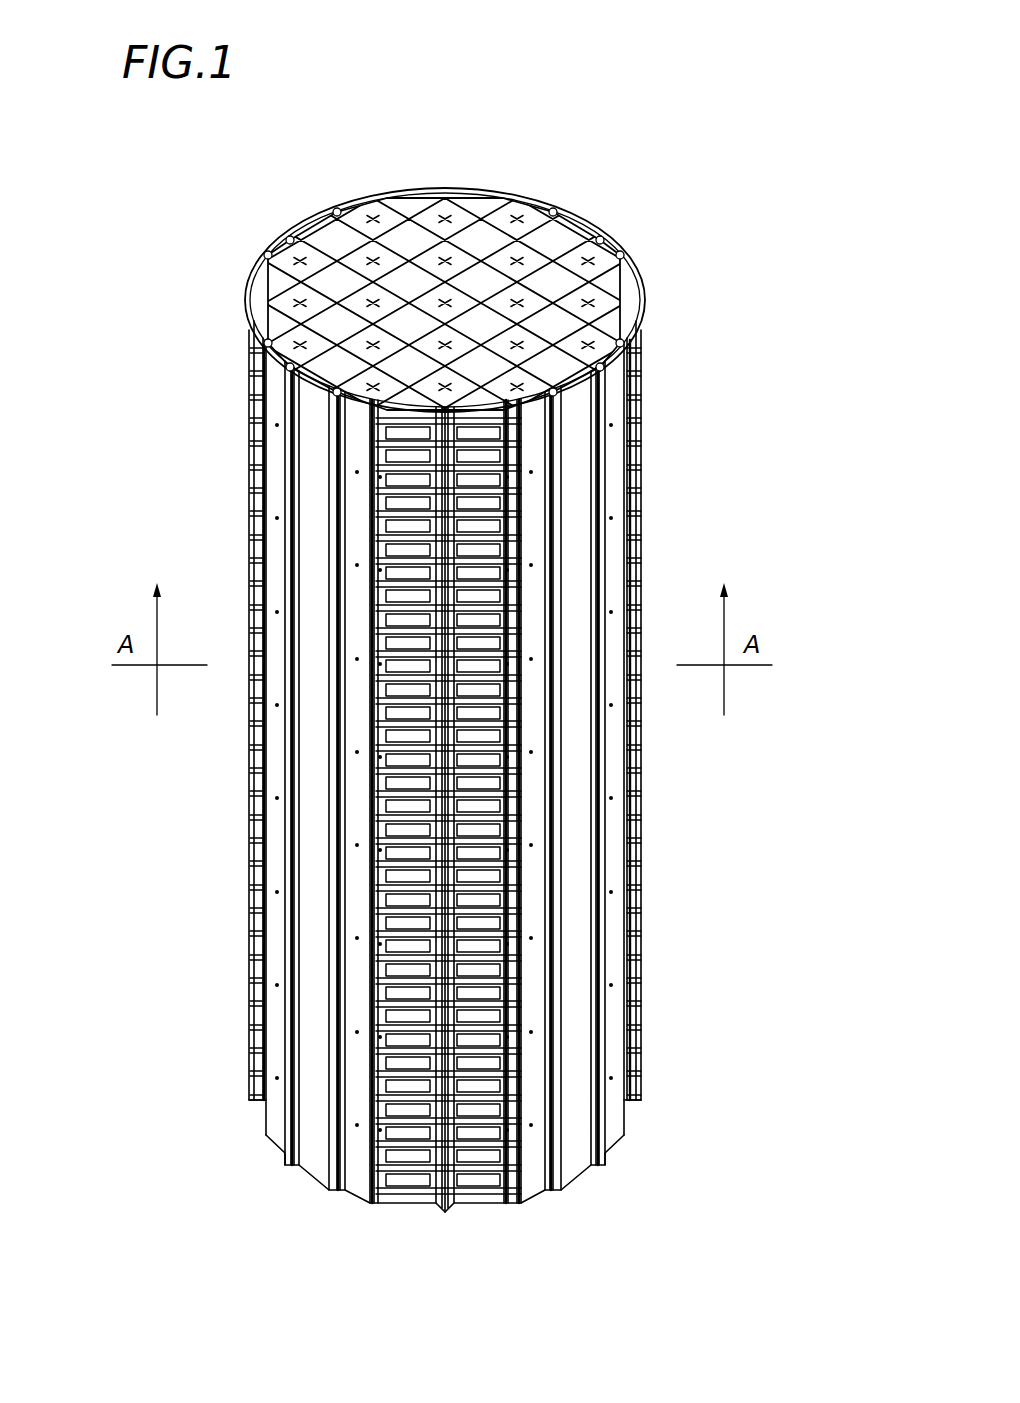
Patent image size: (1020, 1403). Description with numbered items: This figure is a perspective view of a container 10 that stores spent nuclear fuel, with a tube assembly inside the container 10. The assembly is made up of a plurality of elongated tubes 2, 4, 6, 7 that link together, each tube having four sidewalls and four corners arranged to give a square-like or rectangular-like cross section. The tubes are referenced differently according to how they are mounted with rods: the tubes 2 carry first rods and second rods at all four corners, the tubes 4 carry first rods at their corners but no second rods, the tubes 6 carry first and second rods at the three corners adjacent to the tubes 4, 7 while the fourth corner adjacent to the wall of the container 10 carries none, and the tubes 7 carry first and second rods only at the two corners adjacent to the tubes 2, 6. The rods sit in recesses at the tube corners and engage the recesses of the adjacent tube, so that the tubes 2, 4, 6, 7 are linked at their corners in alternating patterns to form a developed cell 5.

The container 10 is at (612, 115).
The tubes 2 is at (412, 228).
The tubes 4 is at (492, 227).
The developed cell 5 is at (558, 376).
The tubes 6 is at (412, 224).
The tubes 7 is at (522, 205).